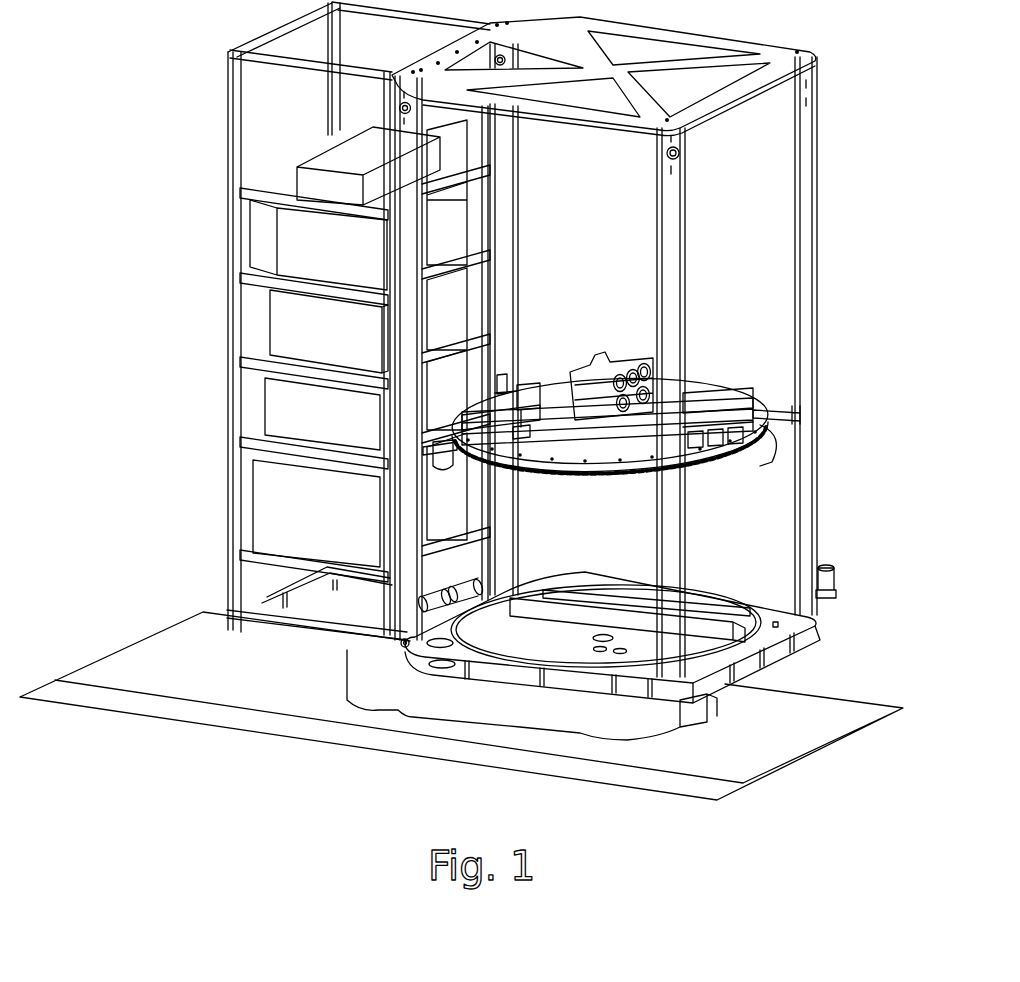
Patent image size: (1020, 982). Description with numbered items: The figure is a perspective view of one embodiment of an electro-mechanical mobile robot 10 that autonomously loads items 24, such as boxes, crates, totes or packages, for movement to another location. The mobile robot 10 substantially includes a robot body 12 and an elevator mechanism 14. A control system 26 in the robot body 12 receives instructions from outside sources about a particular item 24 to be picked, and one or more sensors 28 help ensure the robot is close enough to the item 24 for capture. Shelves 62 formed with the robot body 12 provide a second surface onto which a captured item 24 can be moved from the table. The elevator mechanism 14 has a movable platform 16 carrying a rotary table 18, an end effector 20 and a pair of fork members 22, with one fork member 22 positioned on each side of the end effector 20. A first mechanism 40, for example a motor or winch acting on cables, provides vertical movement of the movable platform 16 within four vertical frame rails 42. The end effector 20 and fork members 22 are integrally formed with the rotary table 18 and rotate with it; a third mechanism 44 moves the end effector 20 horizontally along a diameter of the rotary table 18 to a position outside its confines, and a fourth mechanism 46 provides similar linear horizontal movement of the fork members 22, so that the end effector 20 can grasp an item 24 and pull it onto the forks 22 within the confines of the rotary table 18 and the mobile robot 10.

The mobile robot 10 is at (182, 481).
The robot body 12 is at (363, 677).
The elevator mechanism 14 is at (826, 324).
The movable platform 16 is at (762, 453).
The rotary table 18 is at (738, 402).
The end effector 20 is at (622, 367).
The fork members 22 is at (720, 410).
The item 24 is at (297, 232).
The control system 26 is at (690, 717).
The sensor 28 is at (834, 582).
The first mechanism 40 is at (457, 588).
The vertical frame rails 42 is at (403, 137).
The third mechanism 44 is at (530, 384).
The fourth mechanism 46 is at (548, 412).
The shelves 62 is at (246, 186).